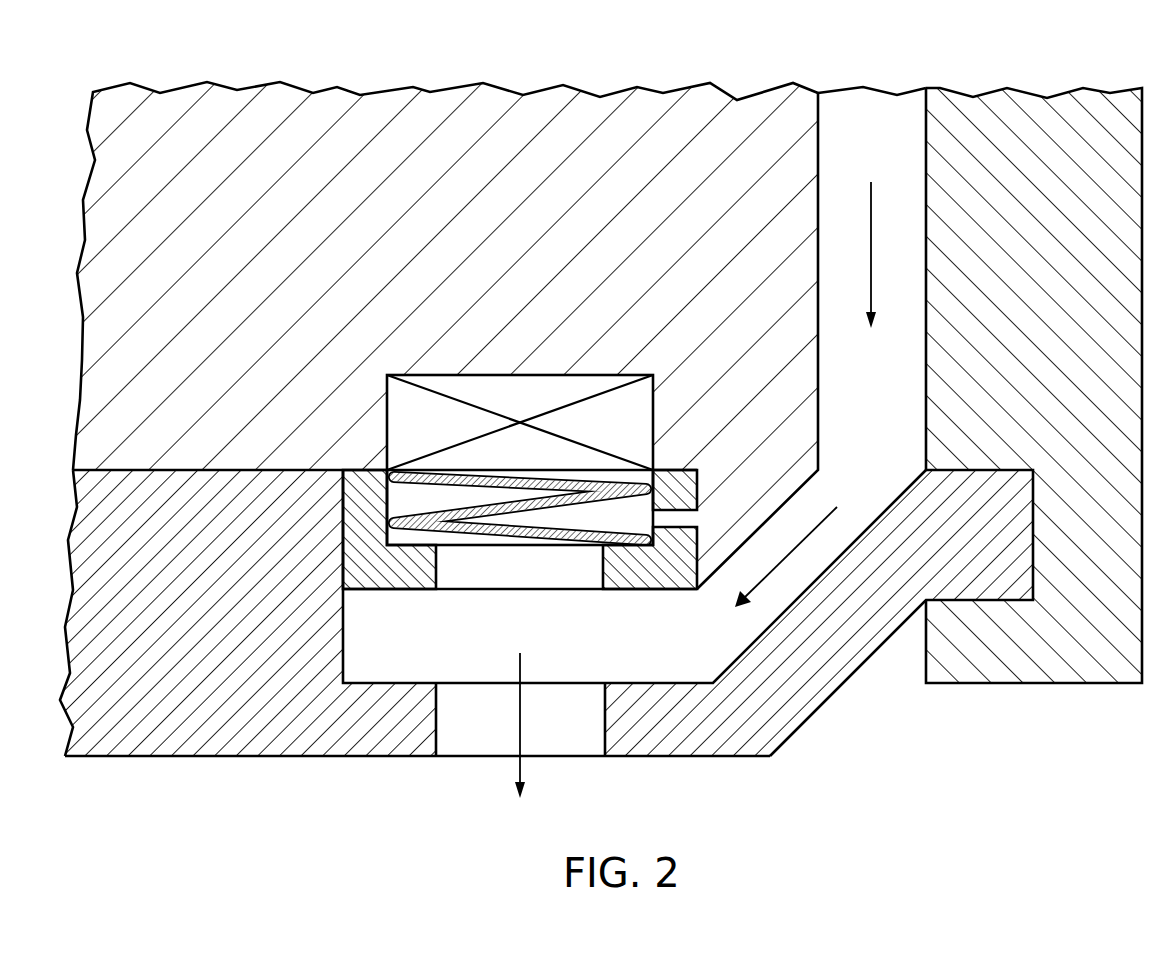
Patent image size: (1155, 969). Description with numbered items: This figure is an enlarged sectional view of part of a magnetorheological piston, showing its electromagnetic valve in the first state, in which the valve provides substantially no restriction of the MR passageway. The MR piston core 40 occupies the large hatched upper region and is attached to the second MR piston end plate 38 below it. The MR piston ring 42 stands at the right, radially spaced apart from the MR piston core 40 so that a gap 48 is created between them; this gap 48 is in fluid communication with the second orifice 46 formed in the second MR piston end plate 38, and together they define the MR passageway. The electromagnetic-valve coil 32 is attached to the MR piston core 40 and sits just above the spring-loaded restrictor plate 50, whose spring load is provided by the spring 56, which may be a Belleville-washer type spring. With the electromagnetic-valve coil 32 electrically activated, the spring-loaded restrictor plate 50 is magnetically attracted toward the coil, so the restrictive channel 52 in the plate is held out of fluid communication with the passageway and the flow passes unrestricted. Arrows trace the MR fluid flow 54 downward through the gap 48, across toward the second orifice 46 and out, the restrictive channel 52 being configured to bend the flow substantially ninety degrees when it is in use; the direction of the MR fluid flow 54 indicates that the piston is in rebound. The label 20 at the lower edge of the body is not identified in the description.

The valve assembly housing 20 is at (185, 757).
The electromagnetic-valve coil 32 is at (500, 403).
The second MR piston end plate 38 is at (187, 619).
The MR piston core 40 is at (385, 275).
The MR piston ring 42 is at (1017, 289).
The second orifice 46 is at (480, 743).
The gap 48 is at (899, 115).
The spring-loaded restrictor plate 50 is at (370, 577).
The restrictive channel 52 is at (568, 578).
The MR fluid flow 54 is at (871, 188).
The spring 56 is at (475, 542).